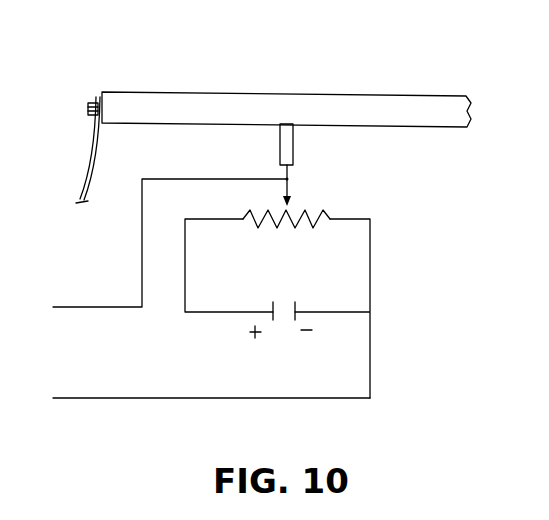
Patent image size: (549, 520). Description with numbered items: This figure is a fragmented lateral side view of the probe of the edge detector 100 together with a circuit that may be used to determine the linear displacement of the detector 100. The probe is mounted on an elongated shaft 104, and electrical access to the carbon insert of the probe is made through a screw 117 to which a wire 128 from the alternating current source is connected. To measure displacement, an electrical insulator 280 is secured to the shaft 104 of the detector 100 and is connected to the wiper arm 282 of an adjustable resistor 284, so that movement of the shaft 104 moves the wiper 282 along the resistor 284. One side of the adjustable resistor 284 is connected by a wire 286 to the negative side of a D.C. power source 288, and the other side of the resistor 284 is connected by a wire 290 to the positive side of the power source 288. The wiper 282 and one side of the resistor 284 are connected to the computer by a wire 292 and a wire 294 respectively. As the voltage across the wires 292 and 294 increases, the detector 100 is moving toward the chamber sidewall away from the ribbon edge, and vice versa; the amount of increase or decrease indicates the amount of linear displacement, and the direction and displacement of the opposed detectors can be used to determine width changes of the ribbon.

The edge detector 100 is at (325, 66).
The elongated shaft 104 is at (221, 85).
The screw 117 is at (88, 104).
The wire 128 is at (89, 176).
The electrical insulator 280 is at (294, 143).
The wiper arm 282 is at (290, 191).
The adjustable resistor 284 is at (320, 209).
The wire 286 is at (371, 266).
The D.C. power source 288 is at (282, 336).
The wire 290 is at (187, 274).
The wire 292 is at (96, 307).
The wire 294 is at (163, 398).